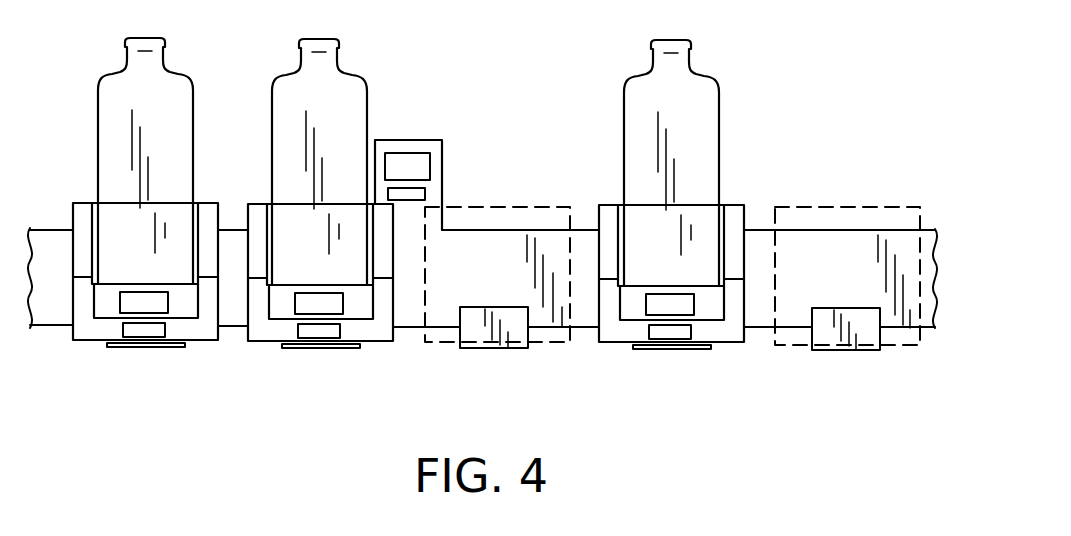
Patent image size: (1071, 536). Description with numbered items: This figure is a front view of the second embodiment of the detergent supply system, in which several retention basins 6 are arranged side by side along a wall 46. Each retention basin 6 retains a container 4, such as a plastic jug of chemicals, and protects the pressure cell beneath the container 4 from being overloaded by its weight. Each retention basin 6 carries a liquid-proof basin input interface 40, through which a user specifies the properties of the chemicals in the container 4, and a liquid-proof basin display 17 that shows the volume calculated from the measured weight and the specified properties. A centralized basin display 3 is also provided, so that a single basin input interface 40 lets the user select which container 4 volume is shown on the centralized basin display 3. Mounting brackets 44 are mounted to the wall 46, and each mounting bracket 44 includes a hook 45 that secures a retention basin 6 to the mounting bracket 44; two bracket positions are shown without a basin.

The centralized basin display 3 is at (403, 157).
The container 4 is at (282, 116).
The retention basin 6 is at (247, 352).
The basin display 17 is at (121, 297).
The basin input interface 40 is at (146, 337).
The mounting bracket 44 is at (503, 247).
The hook 45 is at (128, 347).
The wall 46 is at (535, 93).